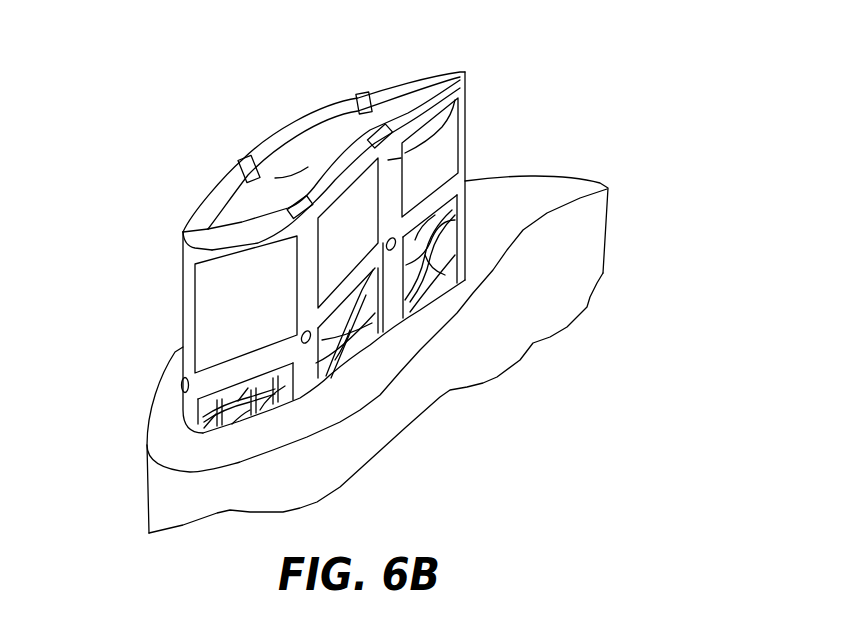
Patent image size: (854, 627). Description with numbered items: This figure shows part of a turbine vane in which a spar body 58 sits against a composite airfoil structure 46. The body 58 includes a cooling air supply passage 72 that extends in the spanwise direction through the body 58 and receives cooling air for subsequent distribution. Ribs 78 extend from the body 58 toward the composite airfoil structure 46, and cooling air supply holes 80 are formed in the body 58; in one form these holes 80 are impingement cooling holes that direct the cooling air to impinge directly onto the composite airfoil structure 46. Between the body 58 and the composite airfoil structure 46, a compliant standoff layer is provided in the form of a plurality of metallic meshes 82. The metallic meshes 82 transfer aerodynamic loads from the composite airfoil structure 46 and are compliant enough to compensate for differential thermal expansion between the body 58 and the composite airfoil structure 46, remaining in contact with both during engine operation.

The composite airfoil structure 46 is at (609, 240).
The body 58 is at (404, 78).
The cooling air supply passage 72 is at (273, 176).
The ribs 78 is at (466, 102).
The cooling air supply holes 80 is at (243, 164).
The metallic meshes 82 is at (463, 253).